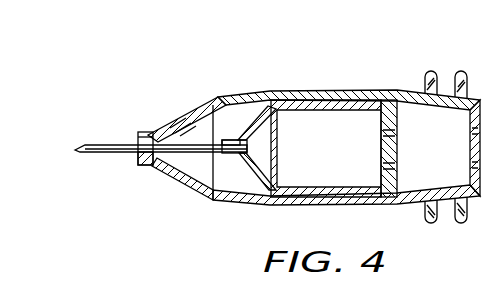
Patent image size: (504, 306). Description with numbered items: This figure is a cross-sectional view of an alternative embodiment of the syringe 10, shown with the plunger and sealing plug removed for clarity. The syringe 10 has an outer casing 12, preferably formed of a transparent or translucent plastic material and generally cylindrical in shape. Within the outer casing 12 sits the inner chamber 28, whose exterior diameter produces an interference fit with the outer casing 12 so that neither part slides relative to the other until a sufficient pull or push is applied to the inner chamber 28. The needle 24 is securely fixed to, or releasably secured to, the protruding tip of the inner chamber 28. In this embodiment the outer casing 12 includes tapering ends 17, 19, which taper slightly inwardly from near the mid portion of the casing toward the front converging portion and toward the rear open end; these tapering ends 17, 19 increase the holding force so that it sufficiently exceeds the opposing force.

The syringe 10 is at (289, 149).
The outer casing 12 is at (300, 206).
The tapering end 17 is at (230, 96).
The tapering end 19 is at (447, 84).
The needle 24 is at (122, 143).
The inner chamber 28 is at (307, 112).